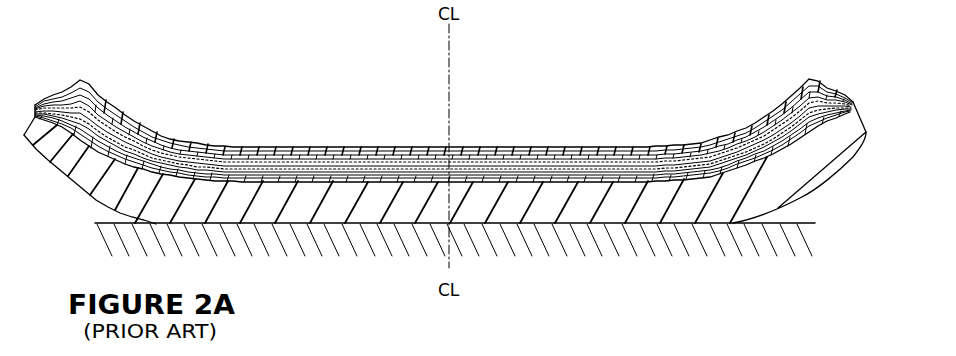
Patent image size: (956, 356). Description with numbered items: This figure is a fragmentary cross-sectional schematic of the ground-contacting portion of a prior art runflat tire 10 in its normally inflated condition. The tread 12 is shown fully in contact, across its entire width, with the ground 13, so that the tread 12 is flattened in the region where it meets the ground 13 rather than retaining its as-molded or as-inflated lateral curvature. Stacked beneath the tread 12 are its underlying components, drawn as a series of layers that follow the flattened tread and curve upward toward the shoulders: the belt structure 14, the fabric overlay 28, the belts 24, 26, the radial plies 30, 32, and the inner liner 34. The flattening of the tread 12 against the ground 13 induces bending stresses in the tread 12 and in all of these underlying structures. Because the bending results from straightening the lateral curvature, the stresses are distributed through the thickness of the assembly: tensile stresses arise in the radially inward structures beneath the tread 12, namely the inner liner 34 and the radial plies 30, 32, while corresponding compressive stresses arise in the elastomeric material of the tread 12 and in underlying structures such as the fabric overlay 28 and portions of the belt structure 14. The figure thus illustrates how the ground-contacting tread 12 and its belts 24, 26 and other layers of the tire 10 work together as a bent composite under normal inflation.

The tire 10 is at (830, 190).
The tread 12 is at (273, 215).
The ground 13 is at (410, 230).
The belt structure 14 is at (548, 170).
The belt 24 is at (337, 175).
The belt 26 is at (378, 165).
The fabric overlay 28 is at (537, 178).
The radial ply 30 is at (600, 150).
The radial ply 32 is at (608, 153).
The inner liner 34 is at (580, 150).